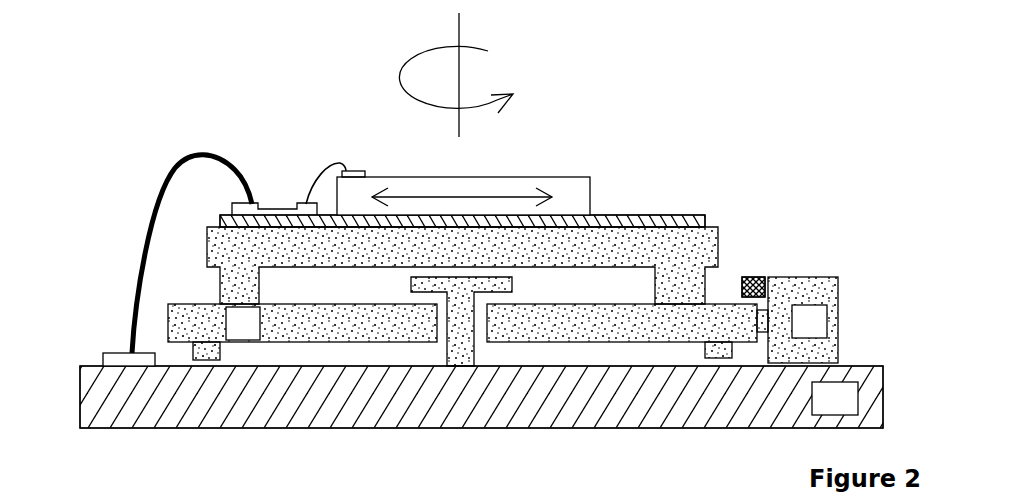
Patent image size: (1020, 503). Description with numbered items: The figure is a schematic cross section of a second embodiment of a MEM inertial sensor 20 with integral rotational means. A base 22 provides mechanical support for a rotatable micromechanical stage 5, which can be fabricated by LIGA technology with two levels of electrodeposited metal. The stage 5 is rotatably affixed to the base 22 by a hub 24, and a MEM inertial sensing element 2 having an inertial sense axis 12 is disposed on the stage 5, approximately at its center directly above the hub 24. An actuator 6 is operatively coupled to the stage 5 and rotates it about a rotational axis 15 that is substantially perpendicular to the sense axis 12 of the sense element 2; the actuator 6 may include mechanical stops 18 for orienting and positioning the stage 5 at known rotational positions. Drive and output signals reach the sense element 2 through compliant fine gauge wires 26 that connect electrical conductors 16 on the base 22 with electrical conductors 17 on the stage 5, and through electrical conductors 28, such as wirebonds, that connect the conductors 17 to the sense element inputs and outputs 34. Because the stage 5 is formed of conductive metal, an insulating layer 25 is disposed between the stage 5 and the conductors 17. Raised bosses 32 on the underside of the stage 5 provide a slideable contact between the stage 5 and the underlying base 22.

The MEM inertial sensing element 2 is at (585, 177).
The rotatable micromechanical stage 5 is at (462, 323).
The actuator 6 is at (797, 320).
The inertial sense axis 12 is at (508, 177).
The rotational axis 15 is at (462, 65).
The electrical conductors on the base 16 is at (115, 360).
The electrical conductors on the stage 17 is at (275, 215).
The mechanical stops 18 is at (750, 280).
The MEM inertial sensor 20 is at (735, 100).
The base 22 is at (481, 397).
The hub 24 is at (458, 283).
The insulating layer 25 is at (667, 218).
The compliant fine gauge wires 26 is at (168, 170).
The electrical conductors 28 is at (330, 167).
The raised bosses 32 is at (207, 350).
The sense element inputs and outputs 34 is at (365, 170).